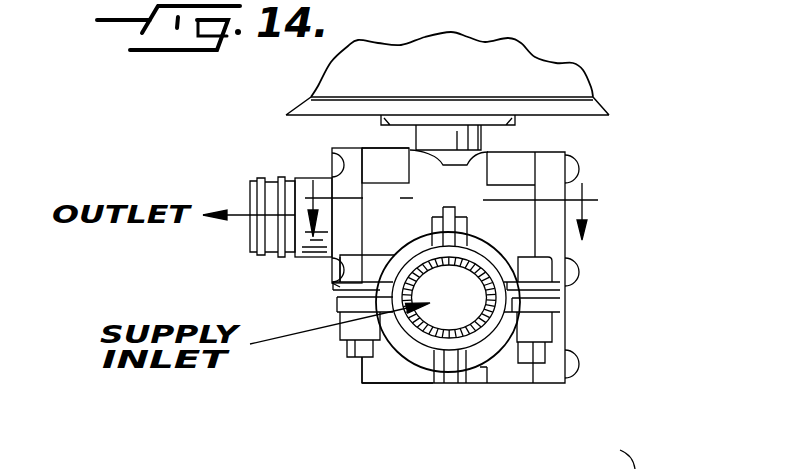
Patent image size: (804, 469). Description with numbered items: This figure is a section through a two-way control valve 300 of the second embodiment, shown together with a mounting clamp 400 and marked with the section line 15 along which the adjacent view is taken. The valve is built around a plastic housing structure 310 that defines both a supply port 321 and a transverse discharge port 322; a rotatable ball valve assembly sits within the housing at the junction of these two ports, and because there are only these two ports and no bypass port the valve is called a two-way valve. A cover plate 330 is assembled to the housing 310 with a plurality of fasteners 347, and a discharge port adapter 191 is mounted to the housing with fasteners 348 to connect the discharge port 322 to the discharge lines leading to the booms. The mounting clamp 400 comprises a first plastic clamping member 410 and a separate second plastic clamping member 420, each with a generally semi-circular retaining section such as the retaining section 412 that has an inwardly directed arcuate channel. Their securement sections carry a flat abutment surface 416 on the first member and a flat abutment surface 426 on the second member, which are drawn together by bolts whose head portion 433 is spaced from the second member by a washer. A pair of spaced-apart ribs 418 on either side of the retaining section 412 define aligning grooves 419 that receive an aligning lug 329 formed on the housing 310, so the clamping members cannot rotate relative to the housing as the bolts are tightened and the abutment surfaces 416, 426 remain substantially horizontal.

The control valve 300 is at (577, 59).
The mounting clamp 400 is at (400, 202).
The aligning lug 329 is at (410, 226).
The retaining section 412 is at (449, 173).
The ribs 418 is at (468, 224).
The discharge port 322 is at (240, 180).
The discharge port adapter 191 is at (250, 245).
The fasteners 348 is at (324, 268).
The flat abutment surface 426 is at (338, 302).
The head portion 433 is at (350, 358).
The first plastic clamping member 410 is at (520, 247).
The flat abutment surface 416 is at (449, 297).
The supply port 321 is at (404, 313).
The aligning groove 419 is at (448, 383).
The second plastic clamping member 420 is at (477, 386).
The housing structure 310 is at (518, 378).
The cover plate 330 is at (560, 325).
The fasteners 347 is at (579, 364).
The section line 15- 15 is at (452, 191).